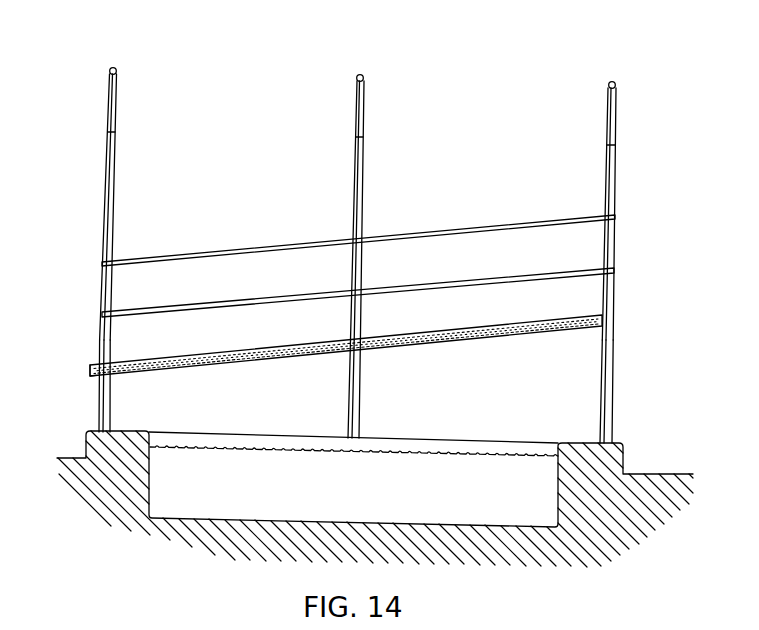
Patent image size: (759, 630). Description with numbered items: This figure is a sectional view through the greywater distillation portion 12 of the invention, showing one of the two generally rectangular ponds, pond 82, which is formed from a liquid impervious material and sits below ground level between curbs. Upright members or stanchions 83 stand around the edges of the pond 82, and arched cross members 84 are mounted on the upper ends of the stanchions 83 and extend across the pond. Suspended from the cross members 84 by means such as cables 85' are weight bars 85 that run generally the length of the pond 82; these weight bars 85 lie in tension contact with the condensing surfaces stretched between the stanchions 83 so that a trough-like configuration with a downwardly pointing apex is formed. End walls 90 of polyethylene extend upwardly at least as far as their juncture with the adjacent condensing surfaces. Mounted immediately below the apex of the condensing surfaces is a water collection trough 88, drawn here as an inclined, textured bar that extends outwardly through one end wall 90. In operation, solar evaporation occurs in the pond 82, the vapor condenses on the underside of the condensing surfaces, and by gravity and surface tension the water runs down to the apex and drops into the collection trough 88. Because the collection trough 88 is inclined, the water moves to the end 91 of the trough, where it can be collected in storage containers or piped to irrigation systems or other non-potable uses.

The greywater distillation portion 12 is at (658, 135).
The pond 82 is at (413, 452).
The stanchion 83 is at (355, 163).
The arched cross member 84 is at (113, 68).
The weight bar 85 is at (358, 242).
The cable 85' is at (361, 112).
The water collection trough 88 is at (295, 362).
The end wall 90 is at (101, 342).
The end of trough 91 is at (90, 374).